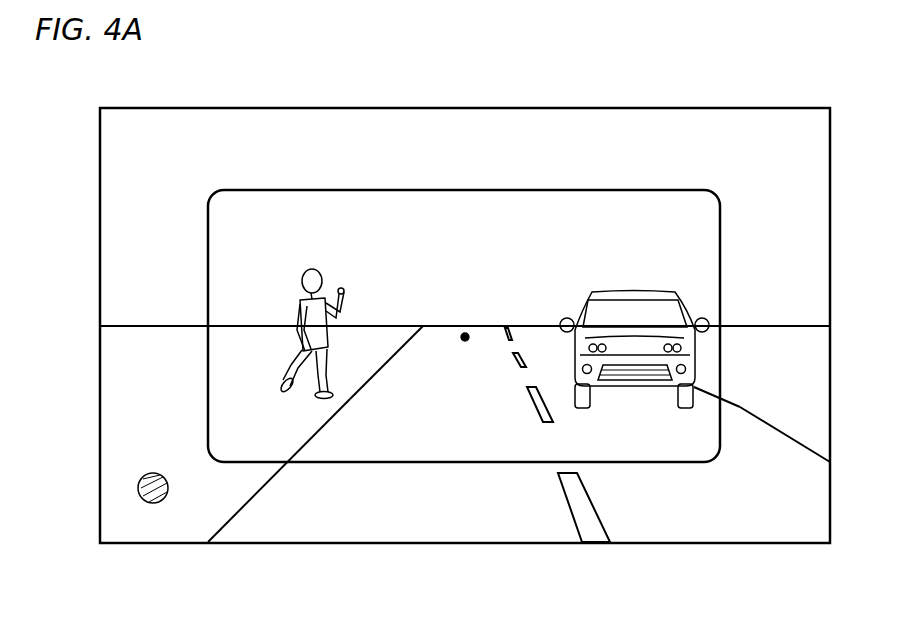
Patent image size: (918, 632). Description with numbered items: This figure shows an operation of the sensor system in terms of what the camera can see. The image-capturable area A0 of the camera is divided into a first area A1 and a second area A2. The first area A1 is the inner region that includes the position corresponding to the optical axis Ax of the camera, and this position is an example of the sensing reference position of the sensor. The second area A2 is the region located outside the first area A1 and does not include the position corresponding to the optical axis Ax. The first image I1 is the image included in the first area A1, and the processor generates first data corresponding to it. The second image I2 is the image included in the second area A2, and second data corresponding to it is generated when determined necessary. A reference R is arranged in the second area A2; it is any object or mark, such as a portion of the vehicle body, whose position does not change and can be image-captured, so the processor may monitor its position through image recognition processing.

The image-capturable area A0 is at (764, 107).
The first area A1 is at (560, 210).
The second area A2 is at (113, 254).
The first image I1 is at (410, 222).
The second image I2 is at (115, 389).
The optical axis Ax is at (465, 333).
The reference R is at (157, 504).